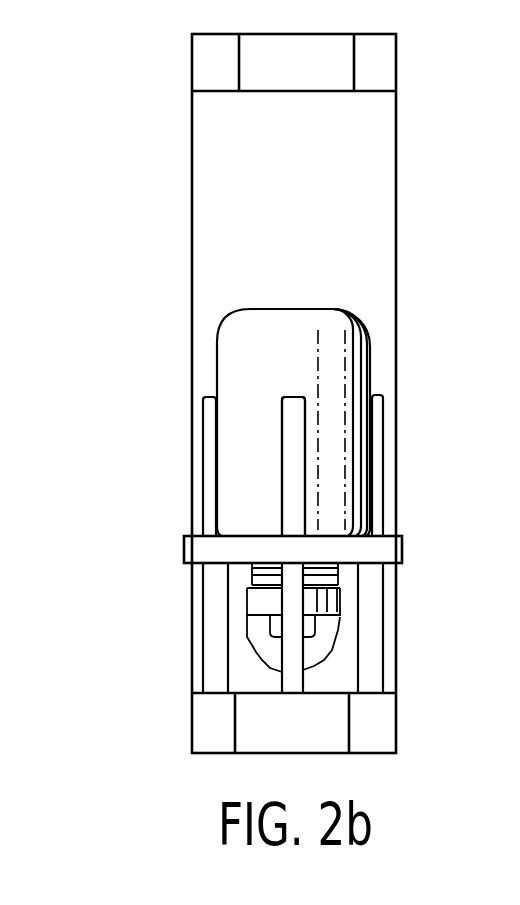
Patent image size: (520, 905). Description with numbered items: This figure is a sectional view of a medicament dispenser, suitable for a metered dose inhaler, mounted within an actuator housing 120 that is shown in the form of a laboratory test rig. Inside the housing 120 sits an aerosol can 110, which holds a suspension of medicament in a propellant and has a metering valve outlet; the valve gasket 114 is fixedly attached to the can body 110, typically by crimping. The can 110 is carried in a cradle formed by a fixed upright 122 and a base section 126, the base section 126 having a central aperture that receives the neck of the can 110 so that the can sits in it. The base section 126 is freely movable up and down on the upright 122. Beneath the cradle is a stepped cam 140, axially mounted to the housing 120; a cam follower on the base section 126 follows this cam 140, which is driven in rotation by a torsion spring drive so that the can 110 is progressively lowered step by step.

The aerosol can 110 is at (371, 340).
The valve gasket 114 is at (258, 600).
The actuator housing 120 is at (226, 263).
The fixed upright 122 is at (293, 466).
The base section 126 is at (402, 546).
The stepped cam 140 is at (335, 656).